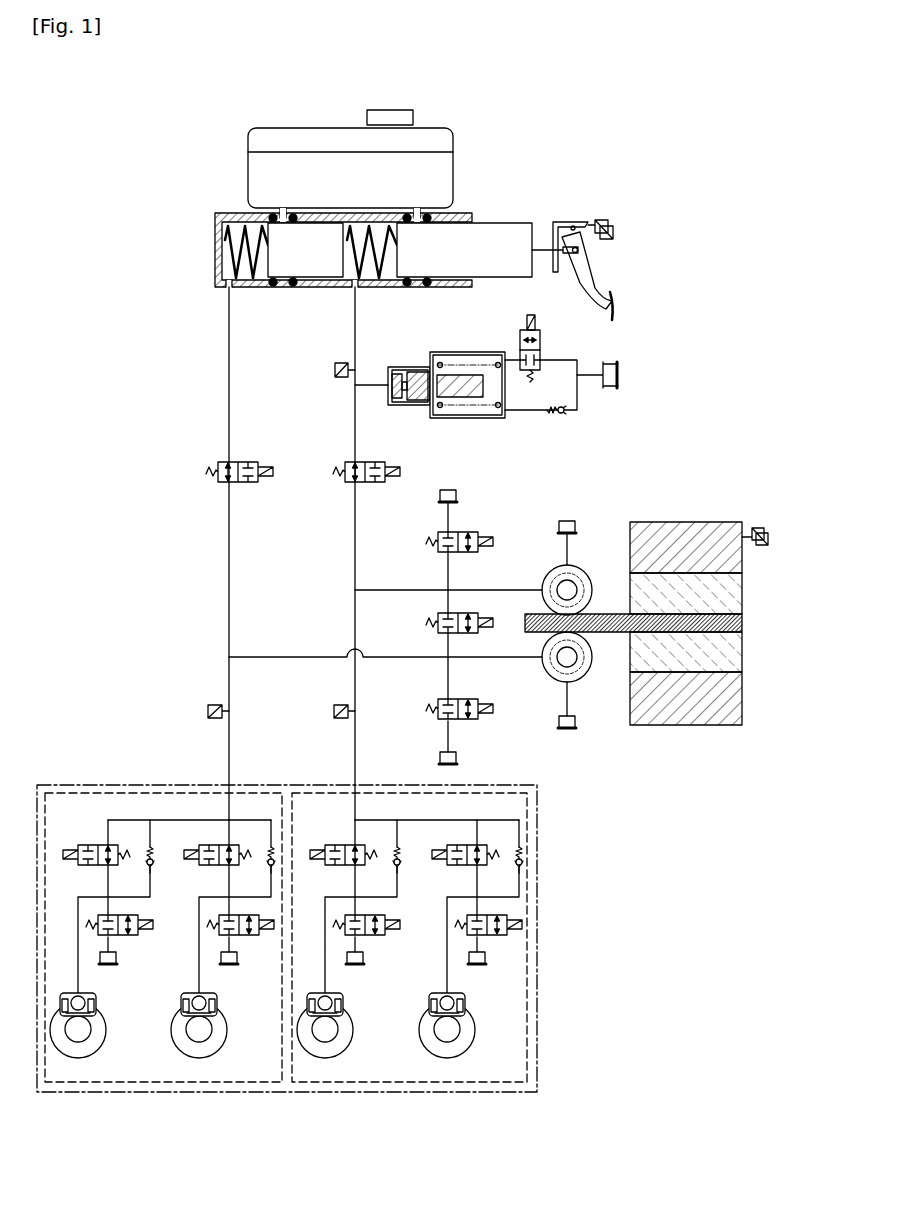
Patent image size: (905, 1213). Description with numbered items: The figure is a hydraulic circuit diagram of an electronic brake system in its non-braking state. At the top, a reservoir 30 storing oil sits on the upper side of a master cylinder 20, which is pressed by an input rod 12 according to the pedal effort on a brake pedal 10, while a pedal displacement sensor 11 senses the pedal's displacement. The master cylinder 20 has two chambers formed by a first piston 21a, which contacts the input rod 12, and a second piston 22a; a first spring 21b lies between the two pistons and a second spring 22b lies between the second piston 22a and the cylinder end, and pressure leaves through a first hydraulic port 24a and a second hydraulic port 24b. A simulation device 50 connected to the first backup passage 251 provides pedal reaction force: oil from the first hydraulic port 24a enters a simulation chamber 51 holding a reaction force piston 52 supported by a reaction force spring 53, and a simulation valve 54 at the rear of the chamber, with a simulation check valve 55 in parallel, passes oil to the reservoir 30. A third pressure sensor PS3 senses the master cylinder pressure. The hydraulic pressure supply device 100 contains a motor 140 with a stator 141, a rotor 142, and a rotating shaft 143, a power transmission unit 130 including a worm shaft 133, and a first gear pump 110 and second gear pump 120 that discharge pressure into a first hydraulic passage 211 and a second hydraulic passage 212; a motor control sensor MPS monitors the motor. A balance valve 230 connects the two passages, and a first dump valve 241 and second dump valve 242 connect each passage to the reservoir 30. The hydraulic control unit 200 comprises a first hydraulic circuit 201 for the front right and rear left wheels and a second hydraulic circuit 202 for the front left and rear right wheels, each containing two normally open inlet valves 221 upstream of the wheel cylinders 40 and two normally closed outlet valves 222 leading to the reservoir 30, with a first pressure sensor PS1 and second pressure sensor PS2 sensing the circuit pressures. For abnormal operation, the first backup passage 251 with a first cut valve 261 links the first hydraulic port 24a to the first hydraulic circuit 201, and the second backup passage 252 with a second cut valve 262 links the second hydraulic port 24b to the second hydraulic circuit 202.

The brake pedal 10 is at (590, 259).
The pedal displacement sensor 11 is at (606, 224).
The input rod 12 is at (543, 246).
The master cylinder 20 is at (238, 213).
The first piston 21a is at (503, 226).
The first spring 21b is at (386, 279).
The second piston 22a is at (283, 279).
The second spring 22b is at (232, 253).
The first hydraulic port 24a is at (352, 284).
The second hydraulic port 24b is at (222, 284).
The reservoir 30 is at (275, 127).
The wheel cylinder 40 is at (98, 1005).
The simulation device 50 is at (474, 370).
The simulation chamber 51 is at (470, 352).
The reaction force piston 52 is at (417, 369).
The reaction force spring 53 is at (441, 362).
The simulation valve 54 is at (541, 333).
The simulation check valve 55 is at (563, 414).
The hydraulic pressure supply device 100 is at (731, 594).
The first gear pump 110 is at (578, 567).
The second gear pump 120 is at (582, 674).
The power transmission unit 130 is at (598, 613).
The worm shaft 133 is at (679, 598).
The motor 140 is at (731, 678).
The stator 141 is at (742, 695).
The rotor 142 is at (742, 648).
The rotating shaft 143 is at (679, 598).
The hydraulic control unit 200 is at (287, 976).
The first hydraulic circuit 201 is at (353, 1093).
The second hydraulic circuit 202 is at (243, 1093).
The first hydraulic passage 211 is at (400, 590).
The second hydraulic passage 212 is at (400, 657).
The inlet valve 221 is at (112, 867).
The outlet valve 222 is at (129, 938).
The balance valve 230 is at (436, 620).
The first dump valve 241 is at (476, 531).
The second dump valve 242 is at (476, 698).
The first backup passage 251 is at (355, 332).
The second backup passage 252 is at (229, 372).
The first cut valve 261 is at (372, 462).
The second cut valve 262 is at (210, 470).
The first pressure sensor PS1 is at (334, 711).
The second pressure sensor PS2 is at (208, 711).
The third pressure sensor PS3 is at (335, 370).
The motor control sensor MPS is at (762, 547).